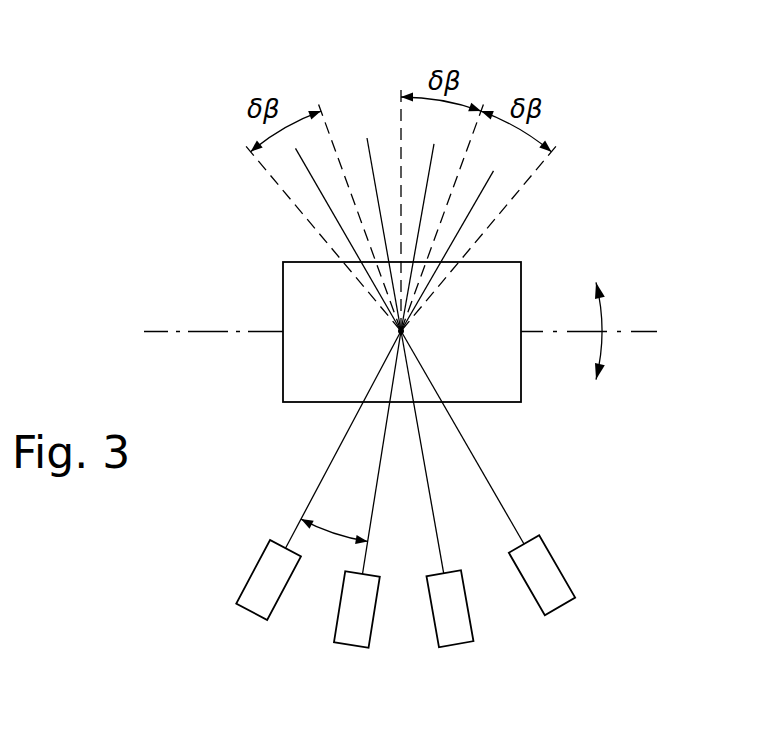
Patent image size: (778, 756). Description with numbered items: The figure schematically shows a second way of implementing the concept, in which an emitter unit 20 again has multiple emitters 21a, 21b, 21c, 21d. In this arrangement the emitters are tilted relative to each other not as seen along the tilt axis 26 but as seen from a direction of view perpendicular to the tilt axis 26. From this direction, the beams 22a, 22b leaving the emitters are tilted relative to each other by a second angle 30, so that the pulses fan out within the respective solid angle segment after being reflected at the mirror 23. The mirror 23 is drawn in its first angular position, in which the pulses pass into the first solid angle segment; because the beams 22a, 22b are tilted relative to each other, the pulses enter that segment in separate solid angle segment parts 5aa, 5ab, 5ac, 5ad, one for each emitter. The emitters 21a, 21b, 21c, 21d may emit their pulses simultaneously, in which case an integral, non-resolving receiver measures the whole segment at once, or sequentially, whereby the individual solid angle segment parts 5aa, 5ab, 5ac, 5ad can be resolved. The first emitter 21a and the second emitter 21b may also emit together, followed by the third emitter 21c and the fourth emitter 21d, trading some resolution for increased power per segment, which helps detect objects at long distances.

The solid angle segment part 5aa is at (507, 147).
The solid angle segment part 5ab is at (443, 130).
The solid angle segment part 5ac is at (385, 155).
The solid angle segment part 5ad is at (280, 155).
The emitter unit 20 is at (449, 621).
The first emitter 21a is at (243, 613).
The second emitter 21b is at (352, 648).
The third emitter 21c is at (460, 648).
The fourth emitter 21d is at (560, 610).
The beam 22a is at (322, 480).
The beam 22b is at (378, 468).
The mirror 23 is at (522, 390).
The tilt axis 26 is at (643, 332).
The second angle 30 is at (333, 533).